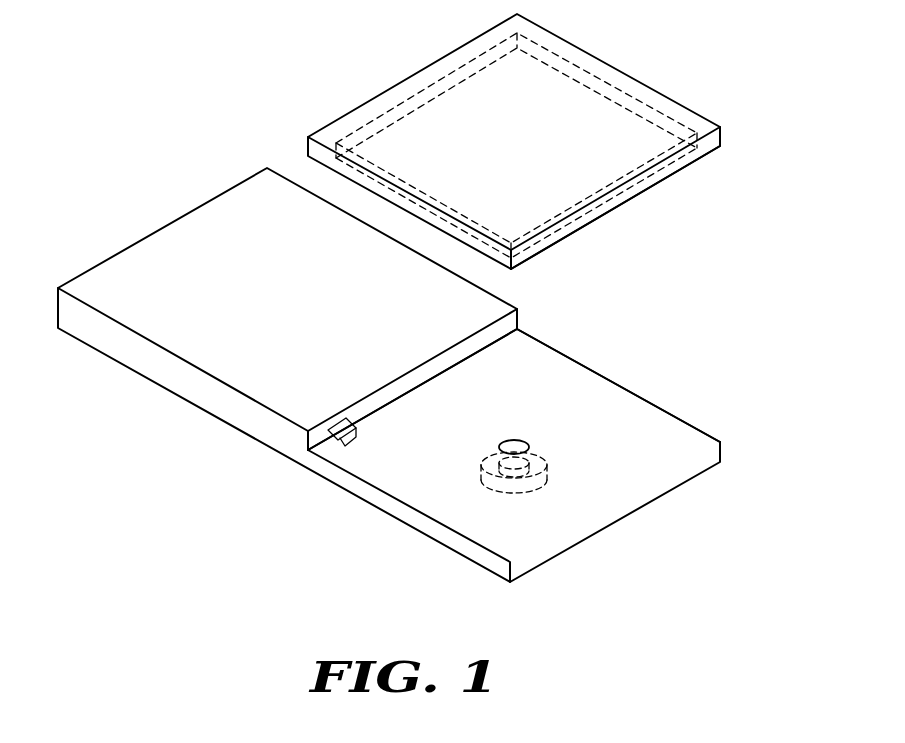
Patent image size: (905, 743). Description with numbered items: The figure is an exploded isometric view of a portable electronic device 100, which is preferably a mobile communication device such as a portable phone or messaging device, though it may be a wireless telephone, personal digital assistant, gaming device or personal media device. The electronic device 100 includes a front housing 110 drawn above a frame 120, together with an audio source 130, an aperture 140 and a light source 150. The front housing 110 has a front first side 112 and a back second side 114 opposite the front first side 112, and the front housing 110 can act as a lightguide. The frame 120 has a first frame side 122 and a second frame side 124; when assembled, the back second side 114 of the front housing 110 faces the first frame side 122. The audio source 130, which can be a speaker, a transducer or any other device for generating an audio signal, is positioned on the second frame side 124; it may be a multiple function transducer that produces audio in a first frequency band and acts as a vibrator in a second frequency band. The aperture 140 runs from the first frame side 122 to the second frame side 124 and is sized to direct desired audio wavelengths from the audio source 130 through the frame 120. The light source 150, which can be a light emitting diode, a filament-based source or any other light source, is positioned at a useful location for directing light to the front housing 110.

The portable electronic device 100 is at (200, 92).
The front housing 110 is at (635, 80).
The front first side 112 is at (462, 97).
The back second side 114 is at (555, 243).
The frame 120 is at (683, 473).
The first frame side 122 is at (640, 413).
The second frame side 124 is at (193, 405).
The audio source 130 is at (541, 462).
The aperture 140 is at (511, 441).
The light source 150 is at (348, 431).